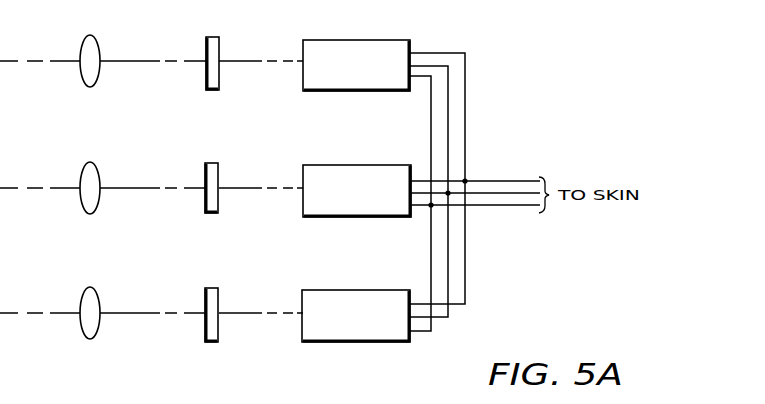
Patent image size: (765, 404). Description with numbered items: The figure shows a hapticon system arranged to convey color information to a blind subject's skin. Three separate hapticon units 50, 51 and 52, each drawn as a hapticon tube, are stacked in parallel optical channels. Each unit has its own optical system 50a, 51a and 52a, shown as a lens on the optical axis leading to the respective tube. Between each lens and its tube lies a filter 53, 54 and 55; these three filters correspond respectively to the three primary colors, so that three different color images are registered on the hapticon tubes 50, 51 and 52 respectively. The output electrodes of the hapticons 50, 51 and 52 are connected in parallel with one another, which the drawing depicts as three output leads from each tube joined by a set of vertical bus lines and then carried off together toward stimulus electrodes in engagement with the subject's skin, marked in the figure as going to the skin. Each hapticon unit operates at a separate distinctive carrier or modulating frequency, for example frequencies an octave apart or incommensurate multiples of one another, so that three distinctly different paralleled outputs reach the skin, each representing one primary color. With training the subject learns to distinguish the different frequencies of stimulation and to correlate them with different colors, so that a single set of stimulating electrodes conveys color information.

The hapticon unit 50 is at (367, 40).
The hapticon unit 51 is at (356, 165).
The hapticon unit 52 is at (348, 290).
The optical system 50a is at (97, 49).
The optical system 51a is at (100, 172).
The optical system 52a is at (100, 298).
The filter 53 is at (219, 79).
The filter 54 is at (218, 173).
The filter 55 is at (218, 298).